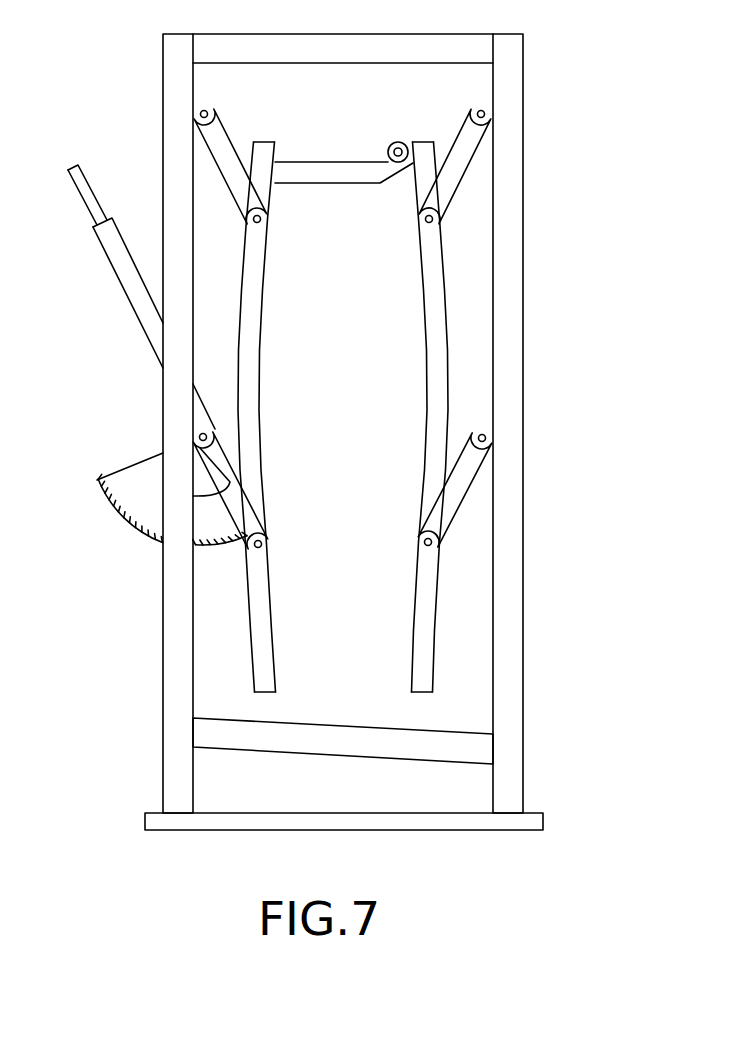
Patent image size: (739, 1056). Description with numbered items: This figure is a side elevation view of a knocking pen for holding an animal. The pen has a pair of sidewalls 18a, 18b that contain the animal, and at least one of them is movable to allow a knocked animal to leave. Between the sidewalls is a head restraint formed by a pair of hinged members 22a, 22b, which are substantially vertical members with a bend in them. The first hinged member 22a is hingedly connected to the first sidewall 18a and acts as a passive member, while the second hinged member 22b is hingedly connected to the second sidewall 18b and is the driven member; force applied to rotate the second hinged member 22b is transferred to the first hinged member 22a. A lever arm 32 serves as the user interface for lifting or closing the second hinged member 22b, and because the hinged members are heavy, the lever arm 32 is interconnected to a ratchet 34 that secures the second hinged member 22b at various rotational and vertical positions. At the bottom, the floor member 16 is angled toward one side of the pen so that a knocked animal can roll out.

The floor member 16 is at (331, 725).
The first sidewall 18a is at (523, 72).
The second sidewall 18b is at (163, 70).
The first hinged member 22a is at (425, 300).
The second hinged member 22b is at (265, 453).
The lever arm 32 is at (120, 291).
The ratchet 34 is at (133, 488).